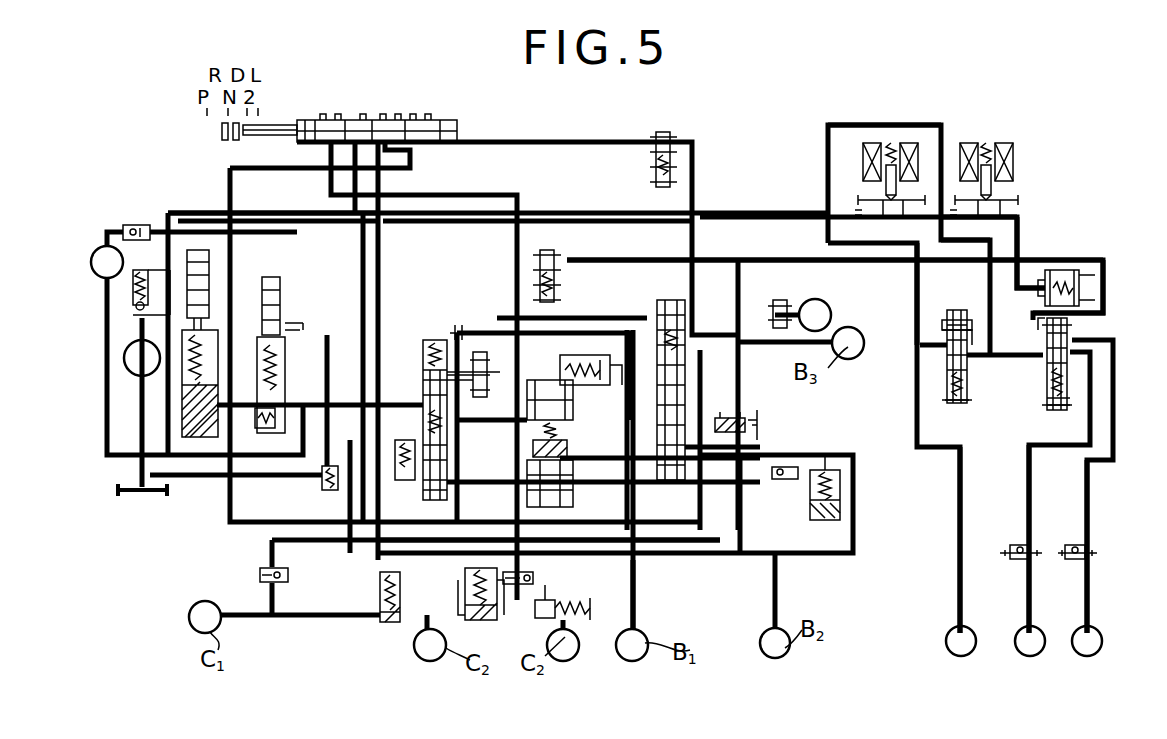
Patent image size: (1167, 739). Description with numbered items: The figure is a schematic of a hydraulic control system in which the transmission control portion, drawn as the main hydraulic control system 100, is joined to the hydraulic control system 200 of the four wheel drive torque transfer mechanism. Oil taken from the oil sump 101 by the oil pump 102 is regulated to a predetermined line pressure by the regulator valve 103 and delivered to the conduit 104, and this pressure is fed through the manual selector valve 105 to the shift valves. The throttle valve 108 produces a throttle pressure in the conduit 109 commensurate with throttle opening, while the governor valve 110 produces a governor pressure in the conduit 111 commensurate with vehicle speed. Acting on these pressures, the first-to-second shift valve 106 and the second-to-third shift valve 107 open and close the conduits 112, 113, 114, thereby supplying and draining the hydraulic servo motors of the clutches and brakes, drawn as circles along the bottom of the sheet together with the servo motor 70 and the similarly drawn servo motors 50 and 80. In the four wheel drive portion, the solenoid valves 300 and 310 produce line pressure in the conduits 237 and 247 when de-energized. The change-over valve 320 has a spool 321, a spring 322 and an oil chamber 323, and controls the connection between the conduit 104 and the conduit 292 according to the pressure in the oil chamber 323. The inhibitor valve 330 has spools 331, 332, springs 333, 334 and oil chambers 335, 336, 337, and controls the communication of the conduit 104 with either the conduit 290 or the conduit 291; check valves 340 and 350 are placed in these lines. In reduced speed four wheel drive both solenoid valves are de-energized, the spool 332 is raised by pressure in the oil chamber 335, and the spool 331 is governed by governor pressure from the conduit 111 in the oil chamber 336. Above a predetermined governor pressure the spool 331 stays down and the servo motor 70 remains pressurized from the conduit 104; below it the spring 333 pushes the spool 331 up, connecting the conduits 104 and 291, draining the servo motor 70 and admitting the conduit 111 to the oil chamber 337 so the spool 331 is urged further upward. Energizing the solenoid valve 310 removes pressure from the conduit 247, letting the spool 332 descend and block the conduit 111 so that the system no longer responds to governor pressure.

The clutch 50 is at (1022, 648).
The servo motor 70 is at (1082, 648).
The brake 80 is at (955, 640).
The hydraulic control circuit 100 is at (731, 161).
The oil sump 101 is at (160, 492).
The oil pump 102 is at (132, 360).
The regulator valve 103 is at (210, 252).
The conduit 104 is at (305, 214).
The manual selector valve 105 is at (338, 110).
The 1-2 shift valve 106 is at (682, 492).
The 2-3 shift valve 107 is at (597, 490).
The throttle valve 108 is at (433, 330).
The conduit 109 is at (478, 330).
The governor valve 110 is at (762, 401).
The conduit 111 is at (790, 257).
The conduit 112 is at (610, 452).
The conduit 113 is at (515, 505).
The conduit 114 is at (640, 600).
The hydraulic control system 200 is at (819, 154).
The conduit 237 is at (918, 280).
The conduit 247 is at (1018, 232).
The conduit 290 is at (1083, 590).
The conduit 291 is at (1025, 590).
The conduit 292 is at (957, 590).
The solenoid valve 300 is at (866, 152).
The solenoid valve 310 is at (1020, 166).
The change-over valve 320 is at (933, 311).
The spool 321 is at (945, 325).
The spring 322 is at (964, 410).
The oil chamber 323 is at (967, 335).
The inhibitor valve 330 is at (1093, 246).
The spool 331 is at (1072, 333).
The spool 332 is at (1082, 276).
The spring 333 is at (1056, 410).
The spring 334 is at (1060, 267).
The oil chamber 335 is at (1042, 290).
The oil chamber 336 is at (1050, 318).
The oil chamber 337 is at (1050, 400).
The check valve 340 is at (1099, 546).
The check valve 350 is at (1012, 532).